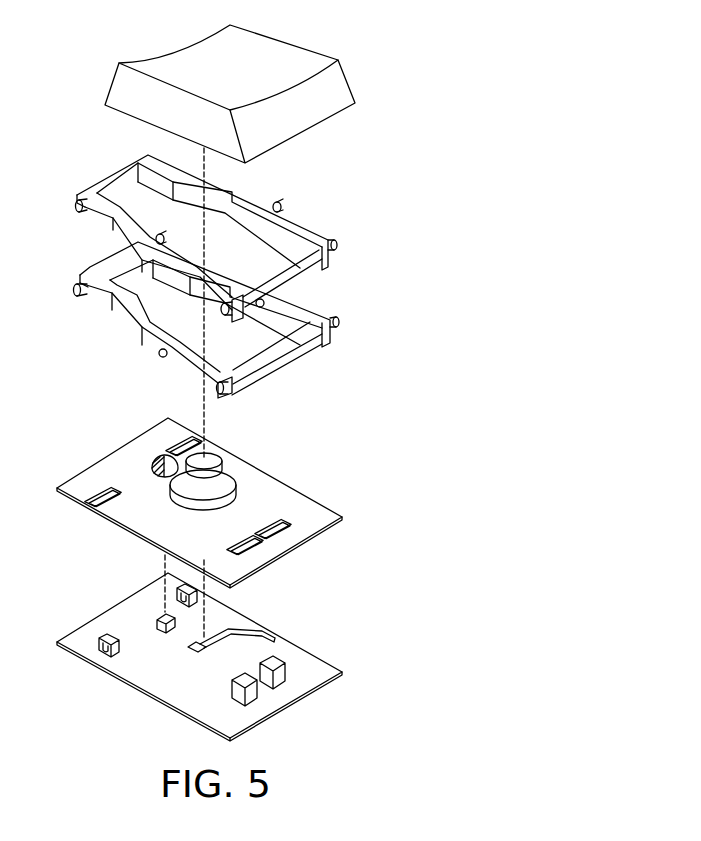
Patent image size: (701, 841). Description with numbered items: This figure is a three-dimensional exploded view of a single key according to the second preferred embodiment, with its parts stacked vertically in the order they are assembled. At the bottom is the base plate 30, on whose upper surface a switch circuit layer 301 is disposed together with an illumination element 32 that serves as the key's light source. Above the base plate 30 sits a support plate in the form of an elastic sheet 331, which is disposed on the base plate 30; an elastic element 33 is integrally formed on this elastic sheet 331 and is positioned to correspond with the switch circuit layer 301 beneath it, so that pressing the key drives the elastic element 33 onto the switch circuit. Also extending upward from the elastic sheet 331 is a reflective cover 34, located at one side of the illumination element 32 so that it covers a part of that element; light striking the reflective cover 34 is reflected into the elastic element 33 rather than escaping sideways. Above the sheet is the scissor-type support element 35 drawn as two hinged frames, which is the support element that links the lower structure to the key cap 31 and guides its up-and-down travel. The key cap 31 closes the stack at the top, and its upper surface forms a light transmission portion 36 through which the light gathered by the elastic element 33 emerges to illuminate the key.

The base plate 30 is at (298, 663).
The switch circuit layer 301 is at (247, 633).
The key cap 31 is at (120, 93).
The illumination element 32 is at (160, 613).
The elastic element 33 is at (227, 480).
The elastic sheet 331 is at (297, 512).
The reflective cover 34 is at (158, 458).
The scissor mechanism 35 is at (65, 153).
The light transmission portion 36 is at (268, 57).